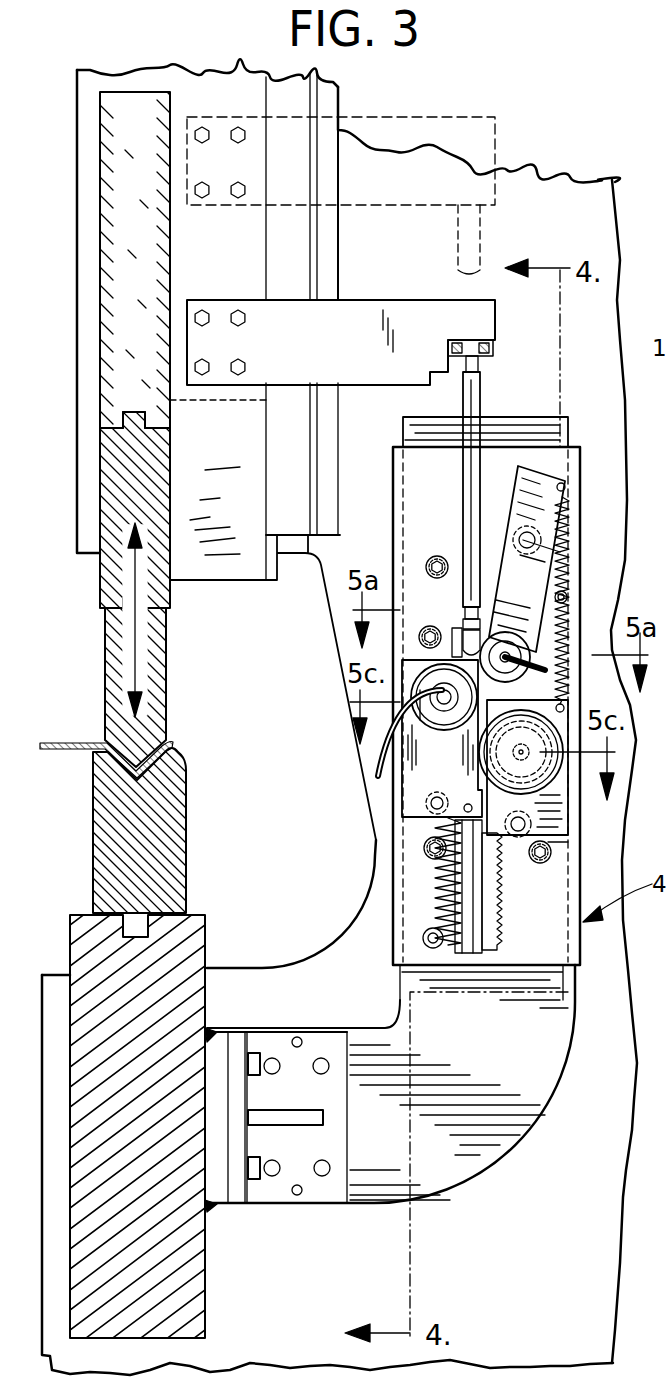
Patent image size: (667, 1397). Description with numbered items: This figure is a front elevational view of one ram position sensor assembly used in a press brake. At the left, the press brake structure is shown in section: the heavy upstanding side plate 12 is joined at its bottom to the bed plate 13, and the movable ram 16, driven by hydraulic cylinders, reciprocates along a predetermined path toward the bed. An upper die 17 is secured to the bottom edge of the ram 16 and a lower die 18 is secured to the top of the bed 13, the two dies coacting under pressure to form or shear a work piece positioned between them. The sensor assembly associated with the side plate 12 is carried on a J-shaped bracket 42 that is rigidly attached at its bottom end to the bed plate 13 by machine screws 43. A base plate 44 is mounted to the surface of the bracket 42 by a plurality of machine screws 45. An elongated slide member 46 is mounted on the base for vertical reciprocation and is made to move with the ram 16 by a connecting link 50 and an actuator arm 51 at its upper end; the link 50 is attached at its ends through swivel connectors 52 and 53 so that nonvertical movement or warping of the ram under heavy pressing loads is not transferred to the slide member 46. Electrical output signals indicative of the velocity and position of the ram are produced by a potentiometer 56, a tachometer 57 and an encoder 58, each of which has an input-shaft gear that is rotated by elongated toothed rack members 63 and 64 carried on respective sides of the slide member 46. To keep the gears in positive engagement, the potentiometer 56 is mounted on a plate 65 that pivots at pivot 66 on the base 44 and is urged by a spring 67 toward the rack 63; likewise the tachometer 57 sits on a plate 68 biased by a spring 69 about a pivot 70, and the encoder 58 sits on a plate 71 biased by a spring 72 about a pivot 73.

The side plate 12 is at (540, 172).
The bed plate 13 is at (195, 1281).
The ram 16 is at (110, 318).
The upper die 17 is at (113, 662).
The lower die 18 is at (105, 842).
The J-shaped bracket 42 is at (528, 1103).
The machine screws 43 is at (253, 1056).
The base plate 44 is at (530, 943).
The machine screws 45 is at (428, 556).
The slide member 46 is at (472, 943).
The connecting link 50 is at (474, 401).
The actuator arm 51 is at (397, 312).
The swivel connector 52 is at (482, 354).
The swivel connector 53 is at (466, 632).
The potentiometer 56 is at (545, 790).
The tachometer 57 is at (504, 640).
The encoder 58 is at (445, 718).
The toothed rack member 63 is at (498, 920).
The toothed rack member 64 is at (447, 947).
The plate 65 is at (556, 830).
The pivot 66 is at (517, 838).
The spring 67 is at (566, 690).
The plate 68 is at (410, 783).
The spring 69 is at (440, 897).
The pivot 70 is at (426, 805).
The plate 71 is at (550, 550).
The spring 72 is at (570, 593).
The pivot 73 is at (528, 532).